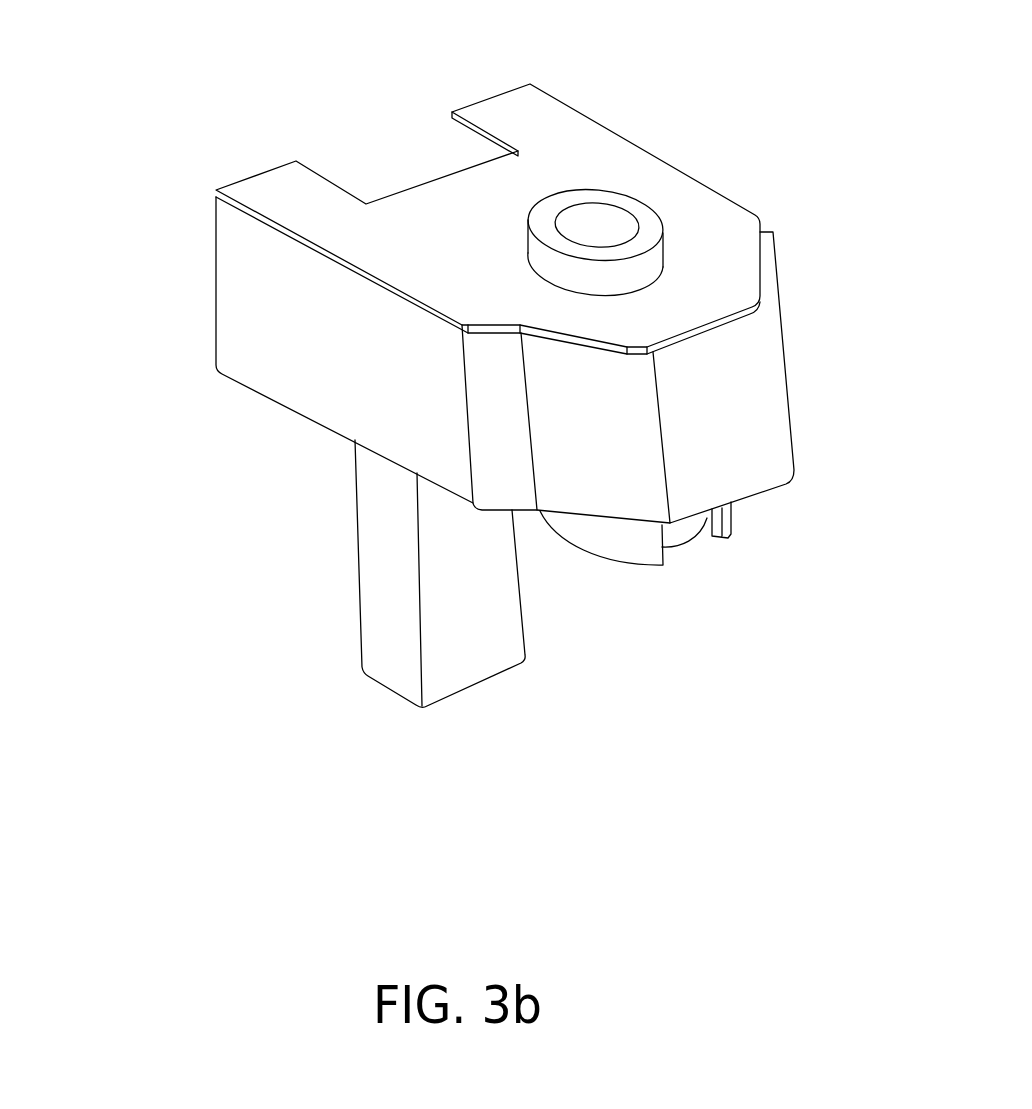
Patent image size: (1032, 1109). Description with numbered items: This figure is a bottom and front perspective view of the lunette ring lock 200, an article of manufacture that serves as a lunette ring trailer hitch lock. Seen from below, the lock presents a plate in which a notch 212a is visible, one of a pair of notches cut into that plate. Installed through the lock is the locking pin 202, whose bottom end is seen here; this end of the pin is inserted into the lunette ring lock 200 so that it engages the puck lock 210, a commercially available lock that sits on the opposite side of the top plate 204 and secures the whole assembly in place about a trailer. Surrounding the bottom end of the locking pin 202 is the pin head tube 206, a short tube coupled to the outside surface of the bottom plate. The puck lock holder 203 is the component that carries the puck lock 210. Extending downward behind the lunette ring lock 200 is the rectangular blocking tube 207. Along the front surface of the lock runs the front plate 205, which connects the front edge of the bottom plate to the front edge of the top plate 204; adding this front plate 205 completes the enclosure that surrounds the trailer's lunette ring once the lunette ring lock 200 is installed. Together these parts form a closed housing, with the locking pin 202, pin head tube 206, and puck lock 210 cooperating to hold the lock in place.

The lunette ring lock 200 is at (208, 62).
The locking pin 202 is at (603, 223).
The puck lock holder 203 is at (622, 542).
The top plate 204 is at (243, 295).
The front plate 205 is at (733, 387).
The pin head tube 206 is at (543, 253).
The rectangular blocking tube 207 is at (390, 627).
The puck lock 210 is at (702, 542).
The notch 212a is at (433, 178).